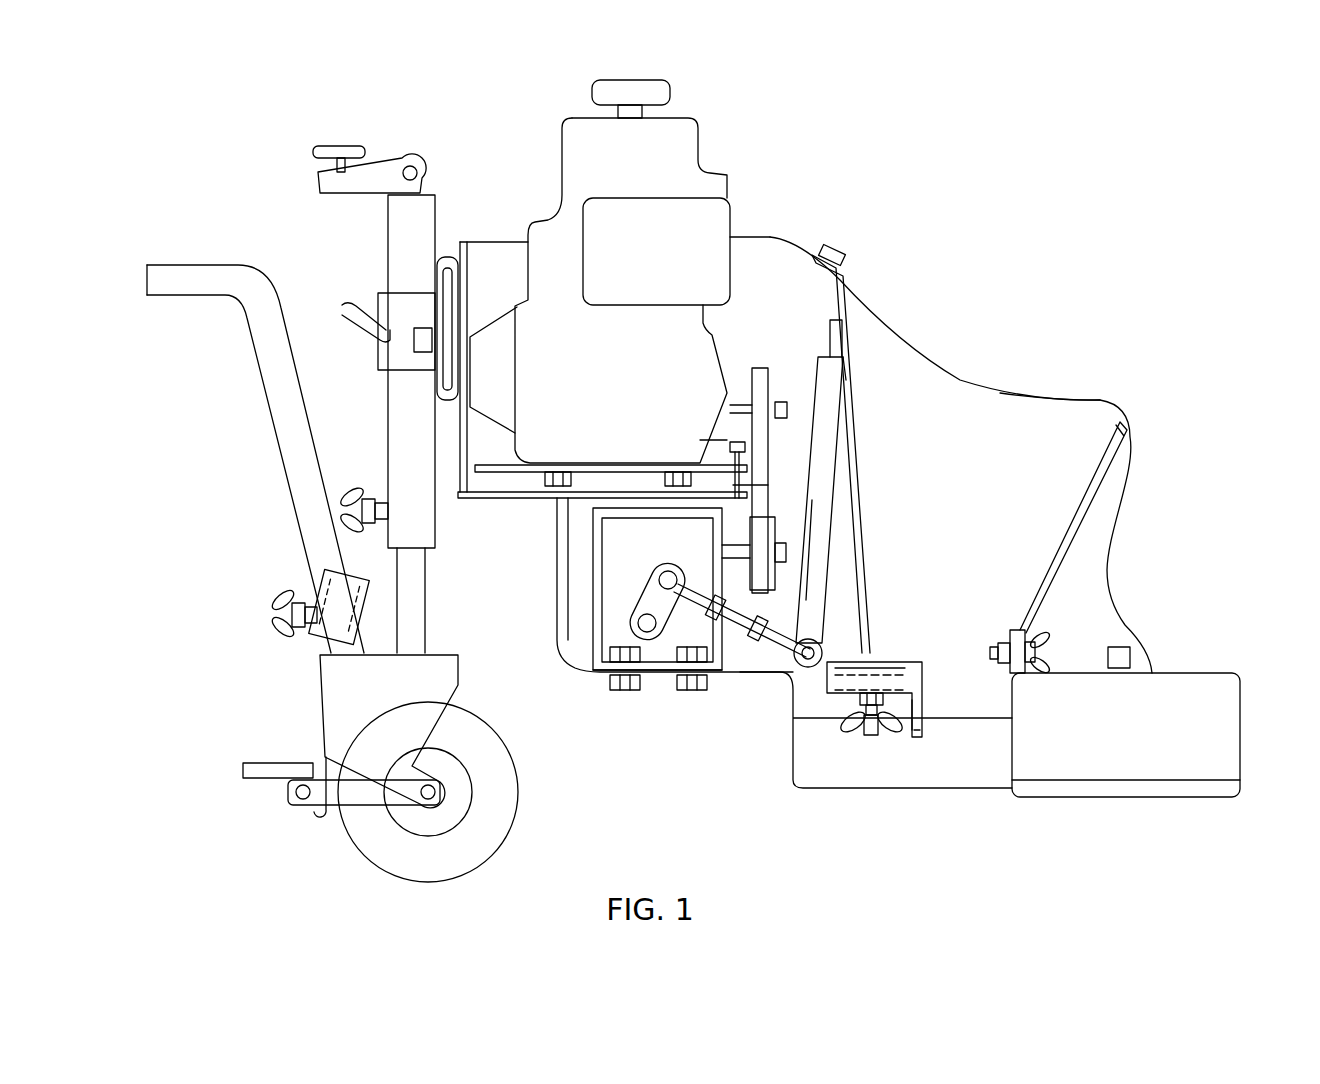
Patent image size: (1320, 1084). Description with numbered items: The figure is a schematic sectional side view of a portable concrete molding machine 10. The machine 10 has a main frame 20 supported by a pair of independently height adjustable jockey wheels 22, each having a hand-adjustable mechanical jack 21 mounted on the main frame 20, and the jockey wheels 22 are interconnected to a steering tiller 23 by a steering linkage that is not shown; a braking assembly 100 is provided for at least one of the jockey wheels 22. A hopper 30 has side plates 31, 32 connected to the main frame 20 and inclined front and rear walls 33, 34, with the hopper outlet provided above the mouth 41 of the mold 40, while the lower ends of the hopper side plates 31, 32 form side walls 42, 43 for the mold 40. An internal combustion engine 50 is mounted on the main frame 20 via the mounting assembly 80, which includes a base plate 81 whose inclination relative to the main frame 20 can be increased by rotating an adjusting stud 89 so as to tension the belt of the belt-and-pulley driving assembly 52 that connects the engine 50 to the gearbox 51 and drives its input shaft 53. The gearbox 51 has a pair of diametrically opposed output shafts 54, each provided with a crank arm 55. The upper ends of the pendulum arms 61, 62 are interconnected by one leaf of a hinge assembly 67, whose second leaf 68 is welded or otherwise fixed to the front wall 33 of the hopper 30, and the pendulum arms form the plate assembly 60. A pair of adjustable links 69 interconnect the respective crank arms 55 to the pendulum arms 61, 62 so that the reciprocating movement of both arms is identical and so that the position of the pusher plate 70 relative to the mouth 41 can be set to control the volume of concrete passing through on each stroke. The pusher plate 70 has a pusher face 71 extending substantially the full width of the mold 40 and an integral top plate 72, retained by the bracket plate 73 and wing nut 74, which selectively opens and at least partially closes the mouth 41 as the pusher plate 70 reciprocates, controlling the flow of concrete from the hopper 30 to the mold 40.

The machine 10 is at (1077, 236).
The main frame 20 is at (525, 503).
The mechanical jack 21 is at (384, 462).
The jockey wheel 22 is at (374, 879).
The steering tiller 23 is at (191, 257).
The hopper 30 is at (1147, 410).
The side plate 31 is at (1058, 390).
The side plate 32 is at (1000, 445).
The front wall 33 is at (853, 383).
The rear wall 34 is at (1103, 521).
The mold 40 is at (1111, 745).
The mouth 41 is at (935, 639).
The side wall 42 is at (1119, 618).
The side wall 43 is at (1018, 583).
The internal combustion engine 50 is at (598, 400).
The gearbox 51 is at (665, 650).
The belt-and-pulley driving assembly 52 is at (787, 380).
The input shaft 53 is at (788, 552).
The output shaft 54 is at (633, 627).
The crank arm 55 is at (650, 603).
The plate 60 is at (840, 429).
The pendulum arm 61 is at (894, 552).
The pendulum arm 62 is at (815, 605).
The hinge assembly 67 is at (825, 340).
The second leaf 68 is at (843, 330).
The adjustable link 69 is at (783, 650).
The pusher plate 70 is at (924, 744).
The pusher face 71 is at (925, 705).
The top plate 72 is at (892, 660).
The bracket plate 73 is at (840, 686).
The wing nut 74 is at (890, 730).
The mounting assembly 80 is at (721, 455).
The base plate 81 is at (492, 476).
The adjusting stud 89 is at (750, 490).
The braking assembly 100 is at (269, 750).